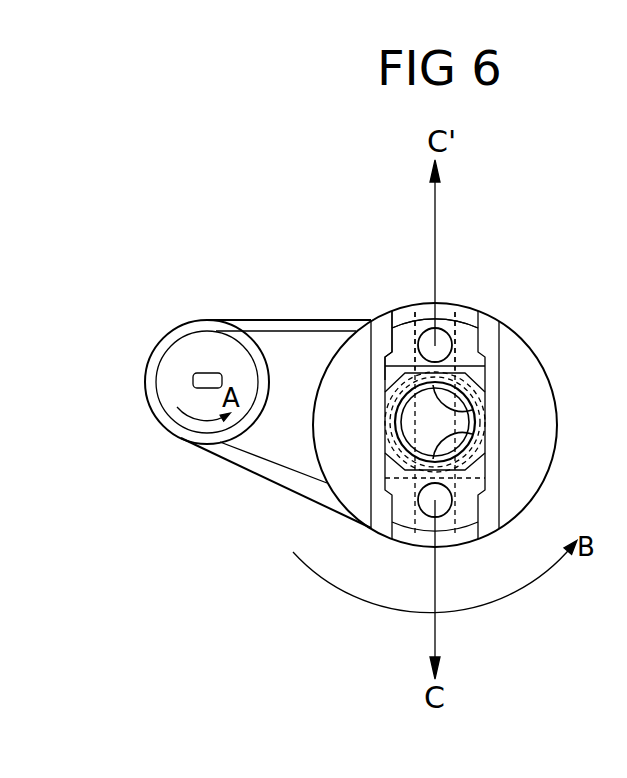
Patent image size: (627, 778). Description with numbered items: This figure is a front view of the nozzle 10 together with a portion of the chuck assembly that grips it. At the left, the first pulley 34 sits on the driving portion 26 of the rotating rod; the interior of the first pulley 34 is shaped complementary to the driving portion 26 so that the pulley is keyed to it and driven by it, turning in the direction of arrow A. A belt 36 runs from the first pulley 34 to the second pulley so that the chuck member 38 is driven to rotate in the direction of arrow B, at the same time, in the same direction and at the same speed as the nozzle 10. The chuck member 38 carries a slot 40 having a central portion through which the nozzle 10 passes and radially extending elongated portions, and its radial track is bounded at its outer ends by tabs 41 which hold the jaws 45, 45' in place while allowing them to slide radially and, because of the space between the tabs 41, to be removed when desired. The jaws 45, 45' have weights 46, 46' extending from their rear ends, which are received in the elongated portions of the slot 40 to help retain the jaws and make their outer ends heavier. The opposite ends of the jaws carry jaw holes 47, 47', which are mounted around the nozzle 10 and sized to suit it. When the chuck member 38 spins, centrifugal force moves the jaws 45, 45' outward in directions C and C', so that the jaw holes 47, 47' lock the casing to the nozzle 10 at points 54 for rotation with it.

The nozzle 10 is at (476, 417).
The driving portion 26 is at (193, 383).
The first pulley 34 is at (193, 350).
The belt 36 is at (314, 330).
The chuck member 38 is at (522, 358).
The slot 40 is at (445, 310).
The tabs 41 is at (487, 323).
The jaw 45 is at (421, 447).
The jaw 45' is at (420, 283).
The weight 46 is at (427, 449).
The weight 46' is at (428, 307).
The jaw hole 47 is at (403, 432).
The jaw hole 47' is at (376, 329).
The points 54 is at (478, 403).